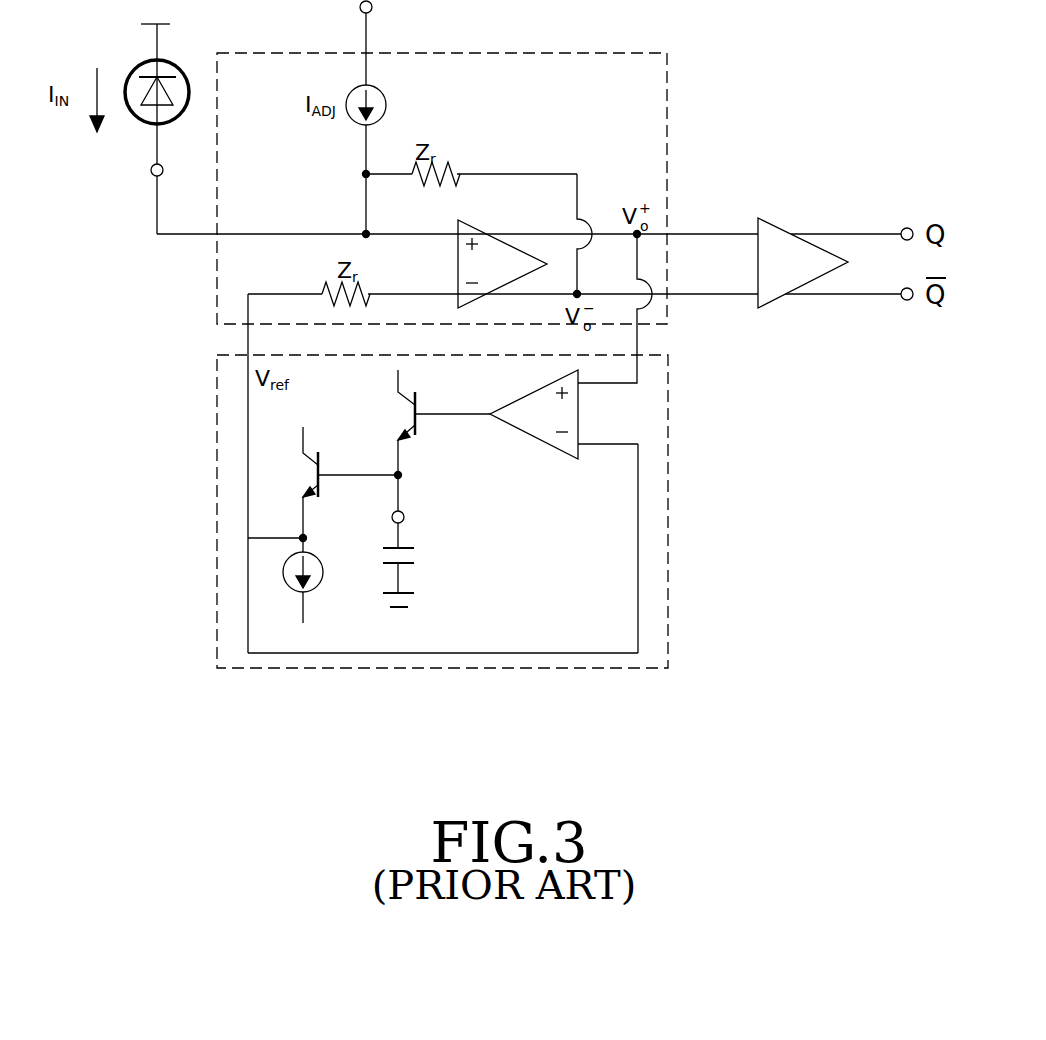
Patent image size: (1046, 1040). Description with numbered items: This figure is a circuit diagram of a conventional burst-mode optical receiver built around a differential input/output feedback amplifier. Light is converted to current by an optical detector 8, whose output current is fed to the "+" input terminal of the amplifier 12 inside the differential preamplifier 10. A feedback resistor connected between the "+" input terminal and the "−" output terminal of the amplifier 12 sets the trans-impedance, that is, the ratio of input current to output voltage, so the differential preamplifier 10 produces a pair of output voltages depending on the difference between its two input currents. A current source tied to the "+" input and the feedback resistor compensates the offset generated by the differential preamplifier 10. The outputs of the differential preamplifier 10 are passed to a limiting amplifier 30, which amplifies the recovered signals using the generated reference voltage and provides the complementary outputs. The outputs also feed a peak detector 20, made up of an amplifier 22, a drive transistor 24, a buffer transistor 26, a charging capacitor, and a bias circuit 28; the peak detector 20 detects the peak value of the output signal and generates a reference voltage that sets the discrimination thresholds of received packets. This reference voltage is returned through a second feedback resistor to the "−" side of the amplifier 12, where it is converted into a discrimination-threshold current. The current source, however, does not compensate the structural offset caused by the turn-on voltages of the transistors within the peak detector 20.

The optical detector 8 is at (177, 62).
The differential preamplifier 10 is at (667, 82).
The amplifier 12 is at (477, 228).
The peak detector 20 is at (668, 413).
The amplifier 22 is at (522, 435).
The drive transistor 24 is at (404, 412).
The buffer transistor 26 is at (304, 478).
The bias circuit 28 is at (323, 572).
The limiting amplifier 30 is at (773, 225).